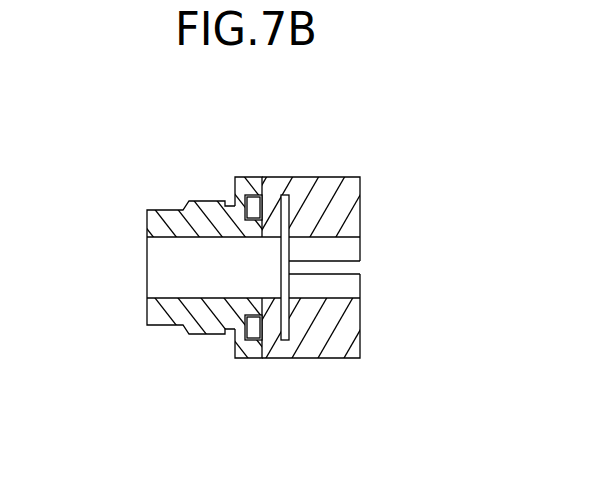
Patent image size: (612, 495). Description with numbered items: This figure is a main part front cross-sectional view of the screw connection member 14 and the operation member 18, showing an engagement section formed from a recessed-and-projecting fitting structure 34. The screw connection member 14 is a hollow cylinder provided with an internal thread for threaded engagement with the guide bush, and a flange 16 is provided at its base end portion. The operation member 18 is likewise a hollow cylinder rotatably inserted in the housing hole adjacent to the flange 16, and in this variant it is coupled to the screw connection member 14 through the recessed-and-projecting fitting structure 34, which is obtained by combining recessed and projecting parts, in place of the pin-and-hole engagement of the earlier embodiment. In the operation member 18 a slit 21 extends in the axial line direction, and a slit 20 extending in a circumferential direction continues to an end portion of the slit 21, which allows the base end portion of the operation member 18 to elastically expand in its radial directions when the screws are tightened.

The screw connection member 14 is at (153, 209).
The flange 16 is at (235, 192).
The operation member 18 is at (313, 177).
The slit 20 is at (285, 342).
The slit 21 is at (350, 267).
The recessed-and-projecting fitting structure 34 is at (257, 199).